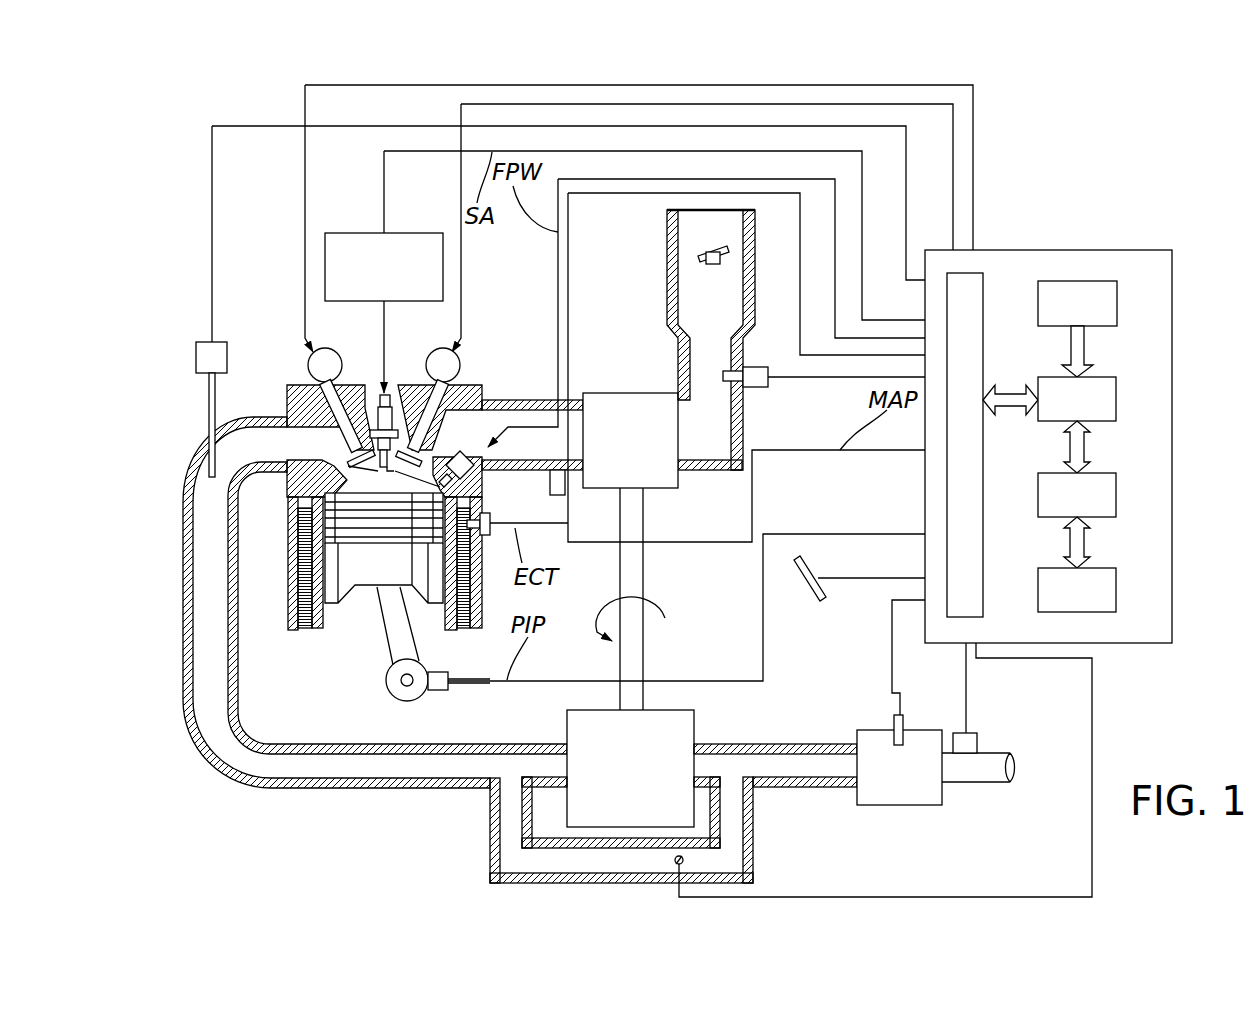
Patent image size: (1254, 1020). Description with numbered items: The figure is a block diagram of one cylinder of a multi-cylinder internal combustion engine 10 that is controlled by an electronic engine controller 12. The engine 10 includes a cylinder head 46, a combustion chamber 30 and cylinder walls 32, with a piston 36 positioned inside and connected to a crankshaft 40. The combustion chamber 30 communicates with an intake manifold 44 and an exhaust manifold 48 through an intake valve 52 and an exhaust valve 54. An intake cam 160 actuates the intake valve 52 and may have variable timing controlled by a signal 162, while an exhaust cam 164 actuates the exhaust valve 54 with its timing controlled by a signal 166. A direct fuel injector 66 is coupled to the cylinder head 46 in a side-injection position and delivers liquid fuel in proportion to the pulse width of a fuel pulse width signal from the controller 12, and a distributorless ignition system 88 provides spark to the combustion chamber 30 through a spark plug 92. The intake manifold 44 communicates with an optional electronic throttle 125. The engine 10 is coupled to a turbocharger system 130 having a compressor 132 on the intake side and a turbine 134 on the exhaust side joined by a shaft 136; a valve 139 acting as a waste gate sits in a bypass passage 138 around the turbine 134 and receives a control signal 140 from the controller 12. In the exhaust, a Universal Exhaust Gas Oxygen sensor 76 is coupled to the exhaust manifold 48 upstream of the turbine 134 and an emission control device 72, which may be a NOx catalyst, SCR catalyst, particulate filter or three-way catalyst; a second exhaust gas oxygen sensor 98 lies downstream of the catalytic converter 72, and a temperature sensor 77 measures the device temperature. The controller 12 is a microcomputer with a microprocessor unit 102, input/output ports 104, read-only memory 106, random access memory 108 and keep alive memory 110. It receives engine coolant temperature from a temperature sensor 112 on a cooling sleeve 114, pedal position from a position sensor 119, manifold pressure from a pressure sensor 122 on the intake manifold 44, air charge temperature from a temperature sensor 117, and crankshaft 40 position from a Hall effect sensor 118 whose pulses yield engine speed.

The internal combustion engine 10 is at (305, 345).
The electronic engine controller 12 is at (1048, 412).
The combustion chamber 30 is at (383, 483).
The cylinder walls 32 is at (327, 617).
The piston 36 is at (387, 565).
The crankshaft 40 is at (390, 690).
The intake manifold 44 is at (505, 400).
The cylinder head 46 is at (465, 385).
The exhaust manifold 48 is at (183, 500).
The intake valve 52 is at (430, 456).
The exhaust valve 54 is at (340, 455).
The direct fuel injector 66 is at (476, 462).
The emission control device 72 is at (922, 807).
The Universal Exhaust Gas Oxygen sensor 76 is at (218, 342).
The temperature sensor 77 is at (905, 715).
The distributorless ignition system 88 is at (412, 233).
The spark plug 92 is at (381, 392).
The second exhaust gas oxygen sensor 98 is at (980, 742).
The microprocessor unit 102 is at (1110, 377).
The input/output ports 104 is at (987, 322).
The read-only memory 106 is at (1098, 281).
The random access memory 108 is at (1110, 473).
The keep alive memory 110 is at (1110, 568).
The temperature sensor 112 is at (493, 523).
The cooling sleeve 114 is at (303, 640).
The temperature sensor 117 is at (770, 389).
The Hall effect sensor 118 is at (445, 672).
The position sensor 119 is at (815, 605).
The pressure sensor 122 is at (565, 495).
The electronic throttle 125 is at (703, 250).
The turbocharger system 130 is at (680, 514).
The compressor 132 is at (630, 440).
The turbine 134 is at (630, 768).
The shaft 136 is at (635, 592).
The bypass passage 138 is at (490, 868).
The waste gate valve 139 is at (676, 864).
The control signal 140 is at (800, 897).
The intake cam 160 is at (430, 357).
The signal 162 is at (968, 127).
The exhaust cam 164 is at (308, 367).
The signal 166 is at (305, 95).